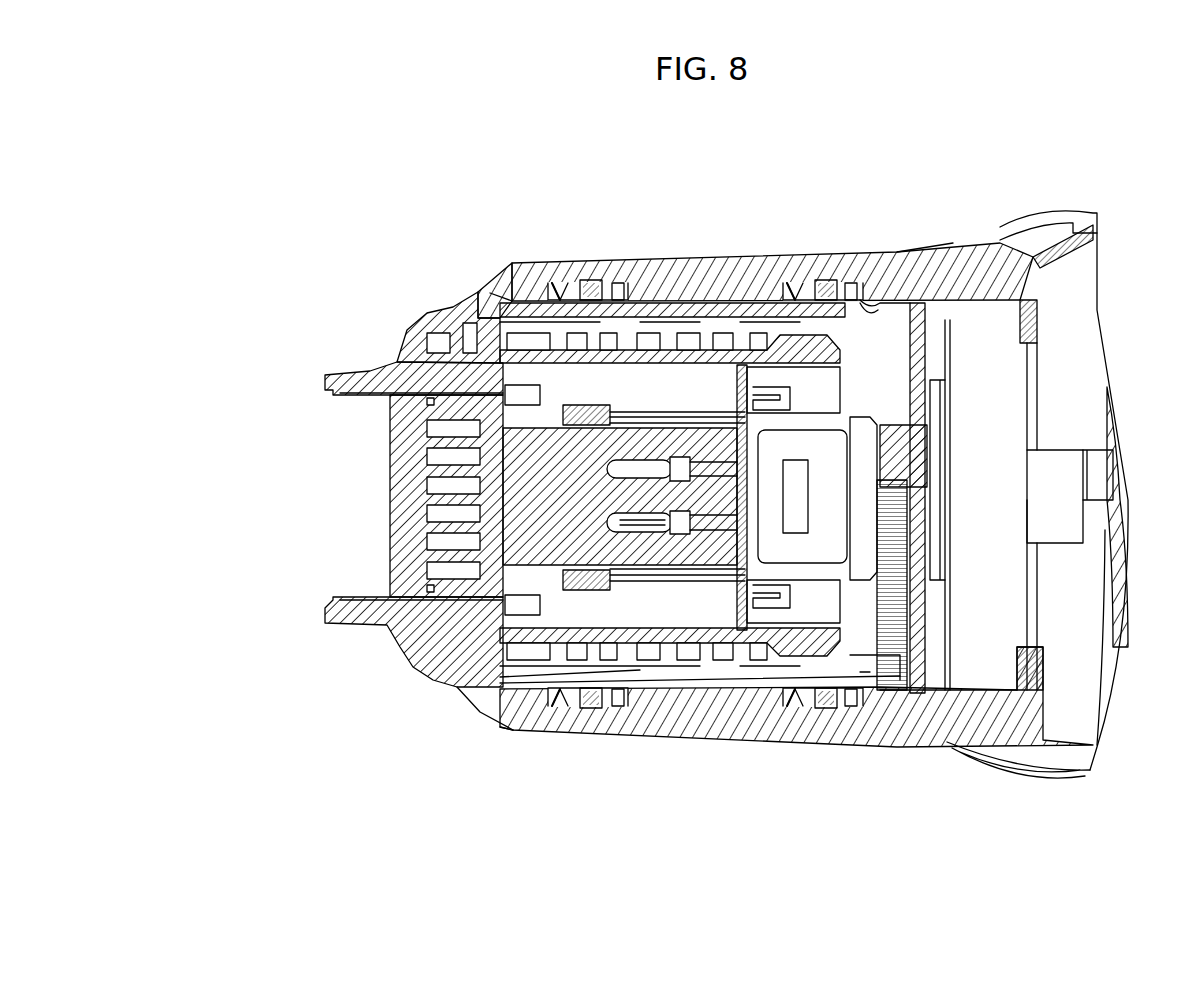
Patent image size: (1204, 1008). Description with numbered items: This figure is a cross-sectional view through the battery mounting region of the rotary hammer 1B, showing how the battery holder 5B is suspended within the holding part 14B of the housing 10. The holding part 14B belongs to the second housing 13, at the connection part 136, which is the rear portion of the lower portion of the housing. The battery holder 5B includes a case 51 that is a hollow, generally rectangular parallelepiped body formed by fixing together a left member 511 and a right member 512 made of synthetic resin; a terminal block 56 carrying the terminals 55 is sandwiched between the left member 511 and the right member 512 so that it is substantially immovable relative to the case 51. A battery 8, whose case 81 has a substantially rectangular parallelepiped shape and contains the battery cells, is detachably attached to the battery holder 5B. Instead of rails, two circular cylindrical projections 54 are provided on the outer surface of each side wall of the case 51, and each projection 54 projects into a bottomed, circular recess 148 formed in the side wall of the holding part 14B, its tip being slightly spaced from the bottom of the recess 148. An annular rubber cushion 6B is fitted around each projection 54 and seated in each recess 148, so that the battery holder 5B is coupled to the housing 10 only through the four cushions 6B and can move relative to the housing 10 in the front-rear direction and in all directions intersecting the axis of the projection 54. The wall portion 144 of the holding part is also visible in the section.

The rotary hammer 1B is at (310, 160).
The second housing 13 is at (1052, 185).
The holding part 14B is at (487, 277).
The recess 148 is at (565, 285).
The projection 54 is at (600, 290).
The cushion 6B is at (623, 285).
The terminal 55 is at (688, 418).
The housing wall 144 is at (718, 270).
The left member 511 is at (915, 263).
The battery holder 5B is at (995, 385).
The terminal block 56 is at (822, 483).
The case 51 is at (940, 600).
The case 81 is at (405, 343).
The battery 8 is at (395, 655).
The housing 10 is at (443, 770).
The connection part 136 is at (958, 762).
The right member 512 is at (870, 680).